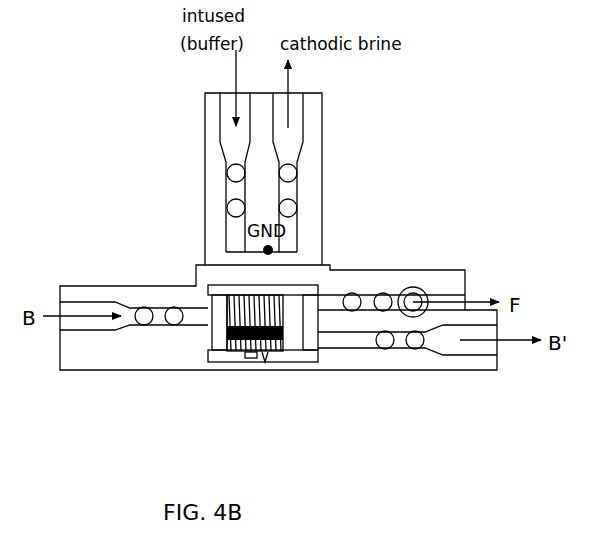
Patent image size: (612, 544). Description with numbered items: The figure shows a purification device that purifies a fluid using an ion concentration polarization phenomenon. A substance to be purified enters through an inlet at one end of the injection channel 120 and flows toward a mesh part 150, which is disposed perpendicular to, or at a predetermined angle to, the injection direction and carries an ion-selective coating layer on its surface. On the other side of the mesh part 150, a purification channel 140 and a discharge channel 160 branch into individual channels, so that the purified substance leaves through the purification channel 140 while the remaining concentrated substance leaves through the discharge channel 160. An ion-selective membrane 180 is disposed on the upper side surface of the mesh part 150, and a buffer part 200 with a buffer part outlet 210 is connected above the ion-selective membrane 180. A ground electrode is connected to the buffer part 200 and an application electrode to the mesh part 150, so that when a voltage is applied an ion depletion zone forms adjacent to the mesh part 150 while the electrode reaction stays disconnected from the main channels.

The injection channel 120 is at (122, 326).
The purification channel 140 is at (368, 300).
The mesh part 150 is at (227, 352).
The discharge channel 160 is at (398, 346).
The ion-selective membrane 180 is at (300, 290).
The buffer part 200 is at (232, 130).
The buffer part outlet 210 is at (292, 130).